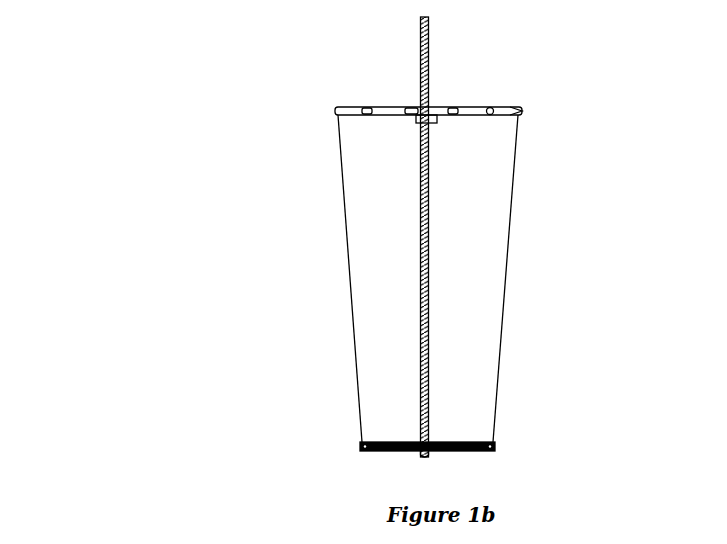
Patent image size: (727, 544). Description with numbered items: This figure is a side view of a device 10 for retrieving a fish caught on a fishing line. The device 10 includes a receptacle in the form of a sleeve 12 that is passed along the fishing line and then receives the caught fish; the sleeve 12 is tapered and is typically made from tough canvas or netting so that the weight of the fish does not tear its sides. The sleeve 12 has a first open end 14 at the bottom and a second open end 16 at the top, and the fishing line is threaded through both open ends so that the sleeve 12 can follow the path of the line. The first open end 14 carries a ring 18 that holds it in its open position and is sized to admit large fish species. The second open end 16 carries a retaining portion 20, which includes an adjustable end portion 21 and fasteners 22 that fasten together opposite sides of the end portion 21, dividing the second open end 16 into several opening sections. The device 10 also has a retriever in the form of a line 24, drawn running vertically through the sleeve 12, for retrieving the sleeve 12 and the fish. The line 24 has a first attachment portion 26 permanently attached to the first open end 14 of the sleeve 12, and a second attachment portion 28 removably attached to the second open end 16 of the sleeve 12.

The device 10 is at (83, 110).
The sleeve 12 is at (495, 259).
The first open end 14 is at (345, 452).
The second open end 16 is at (322, 96).
The ring 18 is at (497, 445).
The retaining portion 20 is at (335, 112).
The adjustable end portion 21 is at (522, 110).
The fasteners 22 is at (490, 104).
The line 24 is at (428, 70).
The first attachment portion 26 is at (421, 445).
The second attachment portion 28 is at (417, 120).